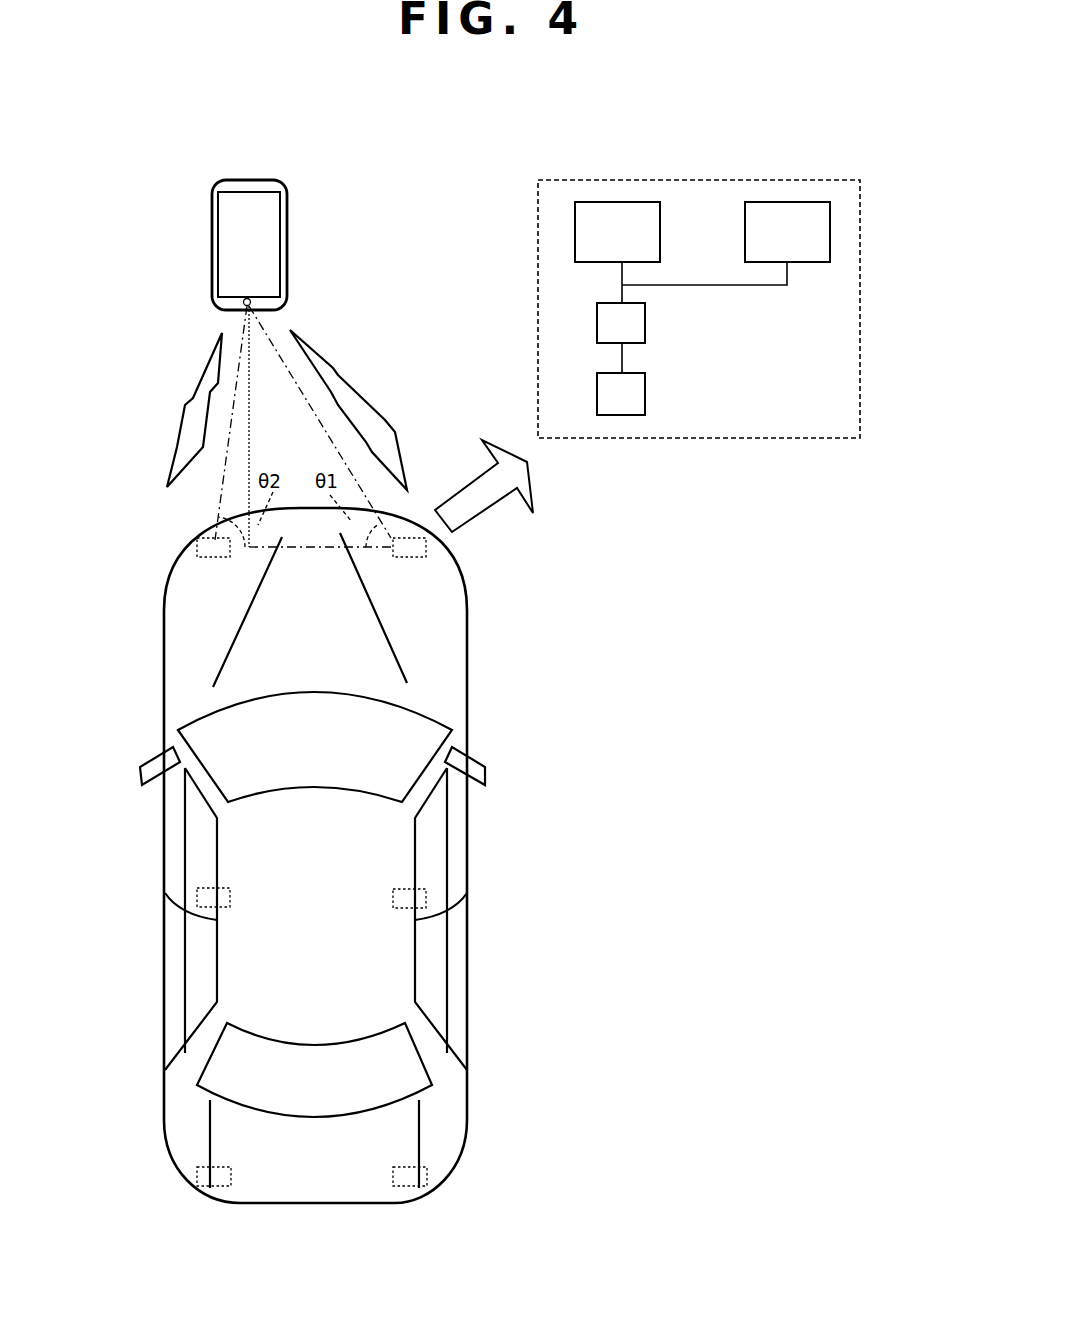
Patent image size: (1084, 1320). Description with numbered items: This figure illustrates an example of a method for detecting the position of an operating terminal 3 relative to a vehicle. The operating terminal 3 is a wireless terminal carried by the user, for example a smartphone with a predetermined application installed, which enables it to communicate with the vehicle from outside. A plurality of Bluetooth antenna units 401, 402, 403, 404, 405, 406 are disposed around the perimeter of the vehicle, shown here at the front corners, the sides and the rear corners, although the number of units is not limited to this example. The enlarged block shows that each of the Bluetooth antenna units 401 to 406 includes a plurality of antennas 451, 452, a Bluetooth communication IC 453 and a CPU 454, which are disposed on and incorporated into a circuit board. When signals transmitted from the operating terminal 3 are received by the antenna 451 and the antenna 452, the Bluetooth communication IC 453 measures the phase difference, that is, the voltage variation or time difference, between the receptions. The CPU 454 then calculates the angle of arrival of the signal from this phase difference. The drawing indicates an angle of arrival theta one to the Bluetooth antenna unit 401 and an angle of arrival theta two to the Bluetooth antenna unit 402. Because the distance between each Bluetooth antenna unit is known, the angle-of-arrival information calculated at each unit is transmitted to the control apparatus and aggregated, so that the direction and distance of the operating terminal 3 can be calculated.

The operating terminal 3 is at (287, 237).
The Bluetooth antenna unit 401 is at (430, 547).
The Bluetooth antenna unit 402 is at (197, 552).
The Bluetooth antenna unit 403 is at (427, 898).
The Bluetooth antenna unit 404 is at (197, 887).
The Bluetooth antenna unit 405 is at (197, 1183).
The Bluetooth antenna unit 406 is at (427, 1178).
The antenna 451 is at (830, 232).
The antenna 452 is at (575, 242).
The Bluetooth communication IC 453 is at (645, 323).
The CPU 454 is at (645, 393).